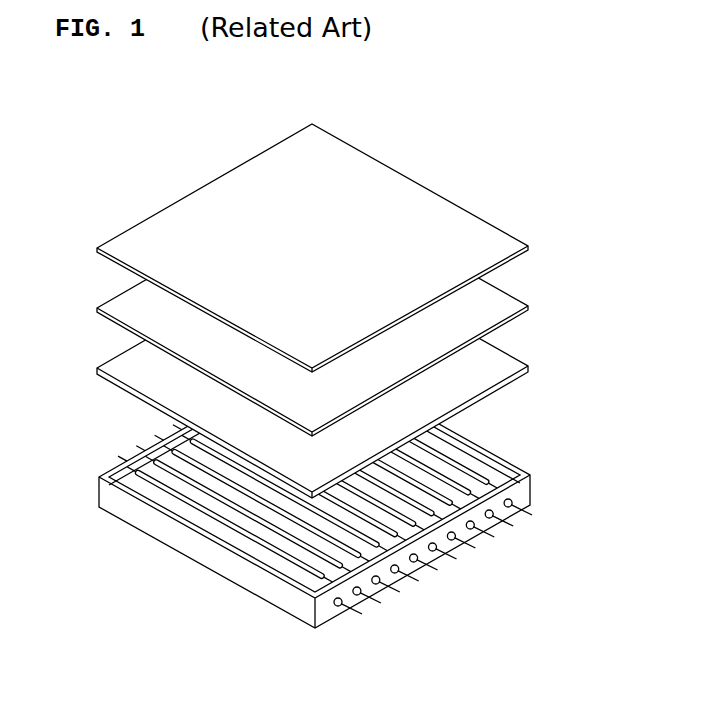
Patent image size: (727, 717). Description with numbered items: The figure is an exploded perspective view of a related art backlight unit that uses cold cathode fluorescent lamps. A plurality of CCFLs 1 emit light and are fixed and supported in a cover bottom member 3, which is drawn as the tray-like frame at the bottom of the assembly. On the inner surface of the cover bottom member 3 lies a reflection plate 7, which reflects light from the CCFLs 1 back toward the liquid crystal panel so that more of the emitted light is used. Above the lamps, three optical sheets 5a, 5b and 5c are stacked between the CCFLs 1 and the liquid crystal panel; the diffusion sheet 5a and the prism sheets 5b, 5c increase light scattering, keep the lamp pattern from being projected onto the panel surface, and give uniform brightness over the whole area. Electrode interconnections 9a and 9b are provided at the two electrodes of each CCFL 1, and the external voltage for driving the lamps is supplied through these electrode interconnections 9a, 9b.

The CCFL 1 is at (223, 537).
The cover bottom member 3 is at (297, 607).
The diffusion sheet 5a is at (512, 362).
The prism sheet 5b is at (510, 302).
The optical sheet 5c is at (395, 183).
The reflection plate 7 is at (250, 543).
The electrode interconnection 9a is at (104, 467).
The electrode interconnection 9b is at (357, 612).